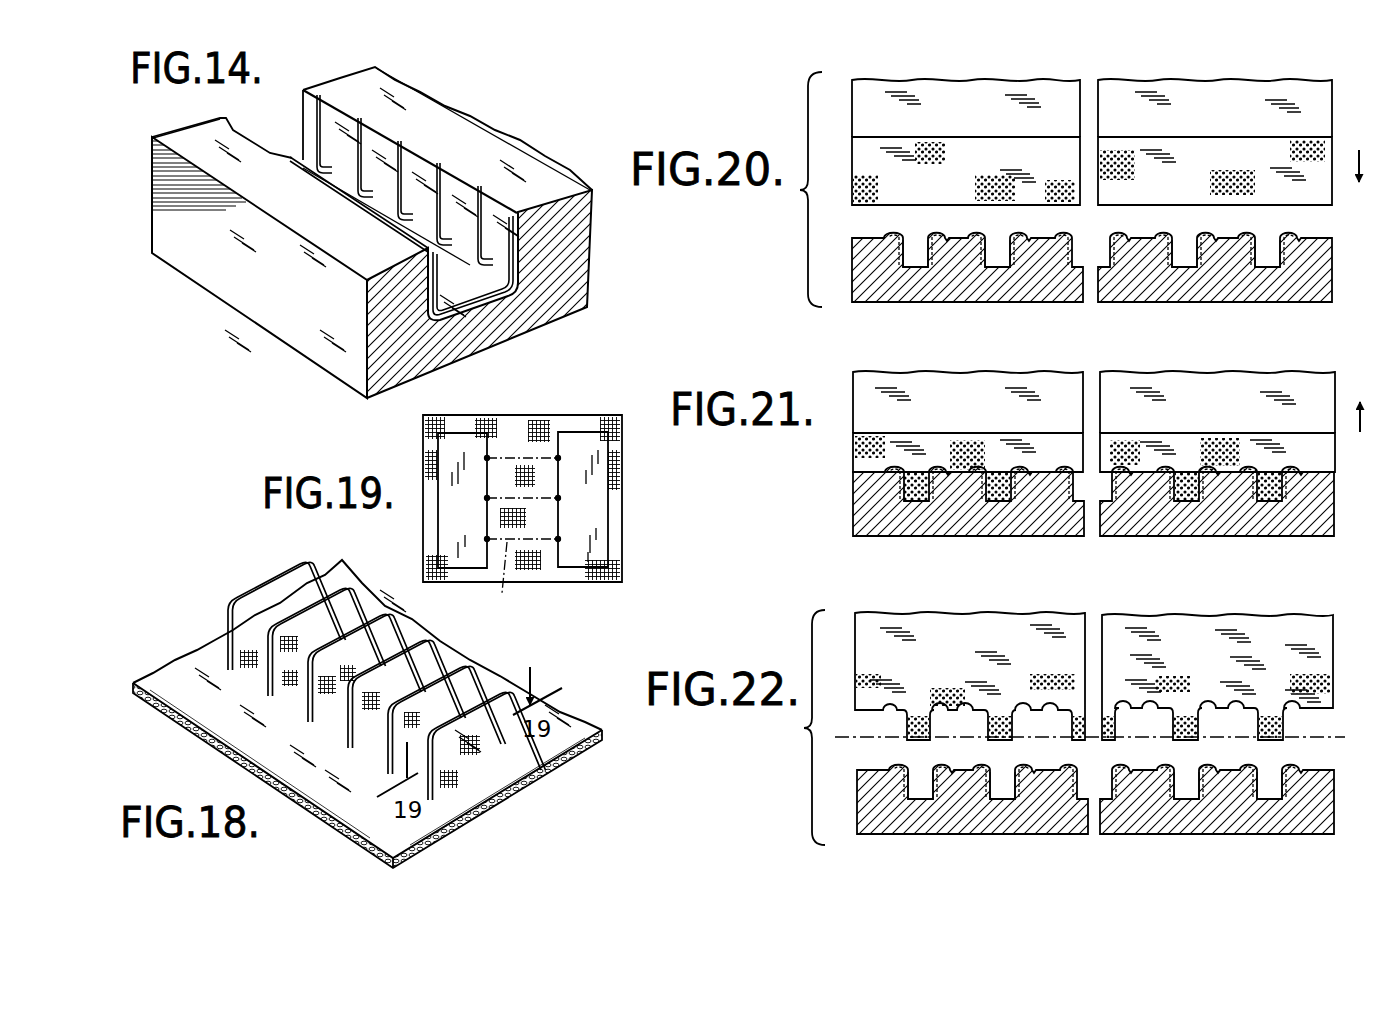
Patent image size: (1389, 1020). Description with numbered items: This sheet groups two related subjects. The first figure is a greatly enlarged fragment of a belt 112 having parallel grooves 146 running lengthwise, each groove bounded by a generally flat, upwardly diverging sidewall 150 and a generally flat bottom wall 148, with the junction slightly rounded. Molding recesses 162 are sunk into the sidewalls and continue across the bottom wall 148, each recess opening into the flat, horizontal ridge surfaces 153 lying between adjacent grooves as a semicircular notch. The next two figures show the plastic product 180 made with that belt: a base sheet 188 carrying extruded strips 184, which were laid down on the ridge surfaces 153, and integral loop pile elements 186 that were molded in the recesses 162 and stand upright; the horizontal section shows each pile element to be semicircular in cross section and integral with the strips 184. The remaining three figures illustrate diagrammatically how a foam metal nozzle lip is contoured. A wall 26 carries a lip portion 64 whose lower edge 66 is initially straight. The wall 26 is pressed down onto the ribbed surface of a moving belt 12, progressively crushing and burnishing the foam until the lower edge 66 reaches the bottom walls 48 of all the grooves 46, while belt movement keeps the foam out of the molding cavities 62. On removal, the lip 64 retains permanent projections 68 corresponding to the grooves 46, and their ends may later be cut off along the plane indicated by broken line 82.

In FIG. 20, the belt 12 is at (1042, 283).
In FIG. 21, the belt 12 is at (1020, 522).
In FIG. 22, the belt 12 is at (1320, 800).
In FIG. 20, the wall 26 is at (1320, 113).
In FIG. 21, the wall 26 is at (1156, 372).
In FIG. 22, the wall 26 is at (1323, 642).
In FIG. 20, the grooves 46 is at (913, 253).
In FIG. 22, the grooves 46 is at (1000, 785).
In FIG. 20, the bottom walls 48 is at (913, 267).
In FIG. 21, the bottom walls 48 is at (915, 502).
In FIG. 22, the bottom walls 48 is at (918, 800).
In FIG. 20, the molding cavities 62 is at (972, 270).
In FIG. 21, the molding cavities 62 is at (1093, 484).
In FIG. 22, the molding cavities 62 is at (1118, 788).
In FIG. 20, the lip portion 64 is at (1323, 192).
In FIG. 21, the lip portion 64 is at (870, 462).
In FIG. 22, the lip portion 64 is at (1323, 692).
In FIG. 20, the lower edge 66 is at (1030, 205).
In FIG. 21, the projections 68 is at (918, 495).
In FIG. 22, the projections 68 is at (918, 718).
In FIG. 22, the broken line 82 is at (1107, 738).
In FIG. 14, the belt 112 is at (572, 276).
In FIG. 14, the grooves 146 is at (288, 126).
In FIG. 14, the bottom wall 148 is at (465, 293).
In FIG. 14, the sidewall 150 is at (417, 167).
In FIG. 14, the ridges 153 is at (178, 138).
In FIG. 14, the molding recesses 162 is at (362, 140).
In FIG. 19, the plastic product 180 is at (585, 508).
In FIG. 18, the plastic product 180 is at (197, 685).
In FIG. 19, the strips 184 is at (450, 528).
In FIG. 18, the strips 184 is at (237, 732).
In FIG. 19, the loop pile elements 186 is at (487, 458).
In FIG. 18, the loop pile elements 186 is at (253, 593).
In FIG. 19, the base sheet 188 is at (567, 577).
In FIG. 18, the base sheet 188 is at (495, 787).